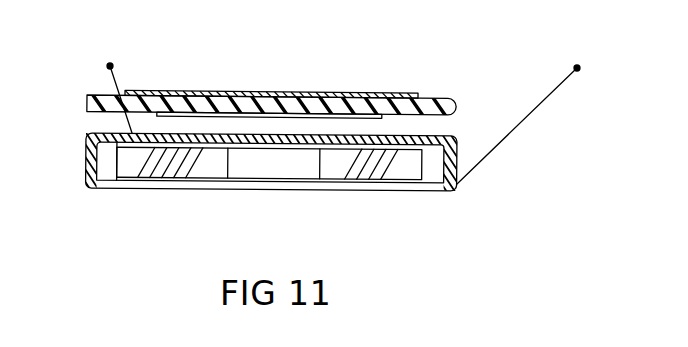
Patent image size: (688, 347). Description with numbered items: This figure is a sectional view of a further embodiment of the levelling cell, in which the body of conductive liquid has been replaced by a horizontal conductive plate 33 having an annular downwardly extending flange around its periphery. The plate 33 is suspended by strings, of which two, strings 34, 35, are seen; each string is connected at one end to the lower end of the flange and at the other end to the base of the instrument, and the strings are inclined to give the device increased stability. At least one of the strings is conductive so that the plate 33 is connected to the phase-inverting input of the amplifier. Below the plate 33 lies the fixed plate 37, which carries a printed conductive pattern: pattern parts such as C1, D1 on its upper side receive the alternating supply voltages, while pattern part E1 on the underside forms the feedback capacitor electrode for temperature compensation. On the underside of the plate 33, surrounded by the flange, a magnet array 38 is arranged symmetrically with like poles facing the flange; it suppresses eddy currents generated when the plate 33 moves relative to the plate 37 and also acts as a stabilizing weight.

The horizontal conductive plate 33 is at (457, 184).
The string 34 is at (120, 92).
The string 35 is at (510, 134).
The plate 37 is at (452, 100).
The magnet array 38 is at (200, 176).
The pattern part C1 is at (193, 90).
The pattern part D1 is at (363, 92).
The pattern part E1 is at (277, 117).